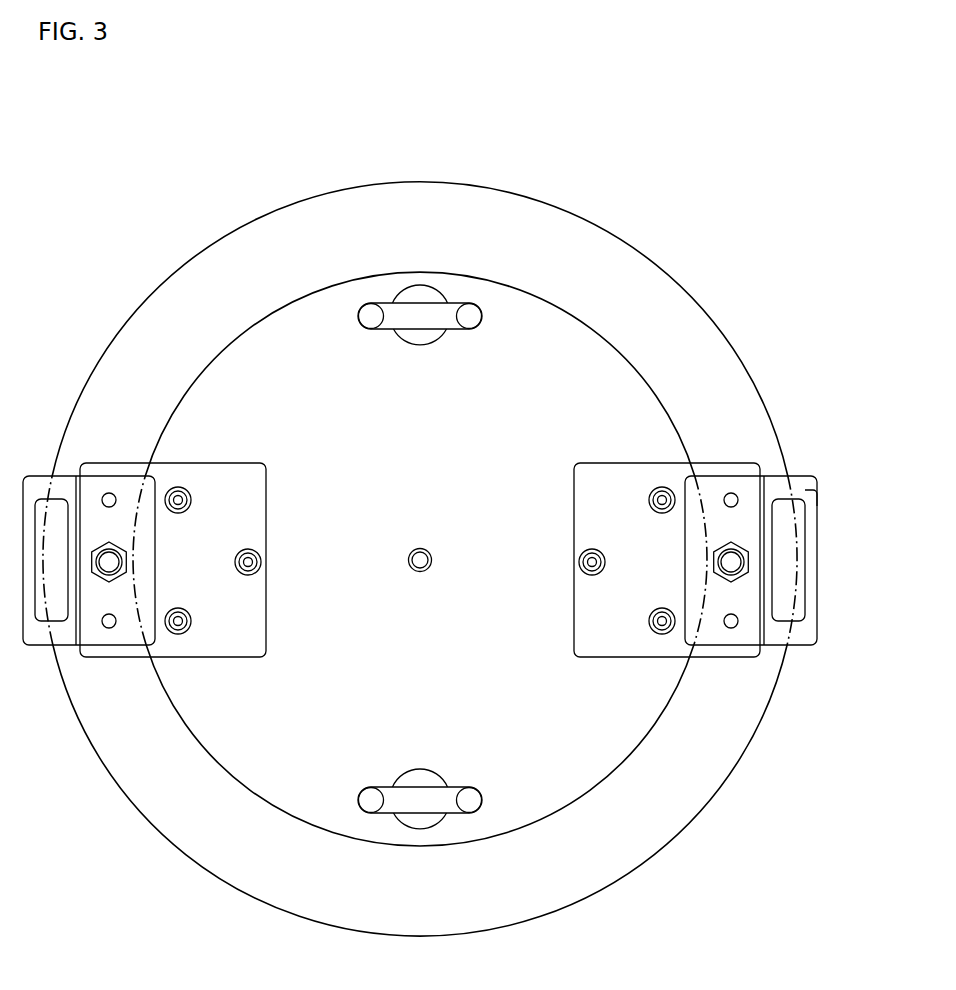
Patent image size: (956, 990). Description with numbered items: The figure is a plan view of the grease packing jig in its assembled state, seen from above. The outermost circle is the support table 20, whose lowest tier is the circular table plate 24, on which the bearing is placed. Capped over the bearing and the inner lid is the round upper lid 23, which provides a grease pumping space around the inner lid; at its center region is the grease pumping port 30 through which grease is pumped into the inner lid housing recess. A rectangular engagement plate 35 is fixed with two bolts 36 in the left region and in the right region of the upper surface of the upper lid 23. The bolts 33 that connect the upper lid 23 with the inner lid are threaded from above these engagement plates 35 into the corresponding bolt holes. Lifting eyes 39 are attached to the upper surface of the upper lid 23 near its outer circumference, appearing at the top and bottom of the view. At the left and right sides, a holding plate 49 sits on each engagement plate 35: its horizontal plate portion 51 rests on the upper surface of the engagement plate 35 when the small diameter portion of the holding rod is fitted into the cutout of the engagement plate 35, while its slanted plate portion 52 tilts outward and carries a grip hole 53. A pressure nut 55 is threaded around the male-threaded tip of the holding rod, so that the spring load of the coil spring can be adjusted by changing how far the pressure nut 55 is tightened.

The support table 20 is at (699, 300).
The upper lid 23 is at (543, 325).
The table plate 24 is at (628, 275).
The grease pumping port 30 is at (420, 552).
The bolt 33 is at (580, 562).
The engagement plate 35 is at (623, 488).
The bolt 36 is at (661, 633).
The lifting eye 39 is at (425, 320).
The holding plate 49 is at (819, 516).
The horizontal plate portion 51 is at (715, 635).
The slanted plate portion 52 is at (805, 487).
The grip hole 53 is at (785, 620).
The pressure nut 55 is at (733, 562).